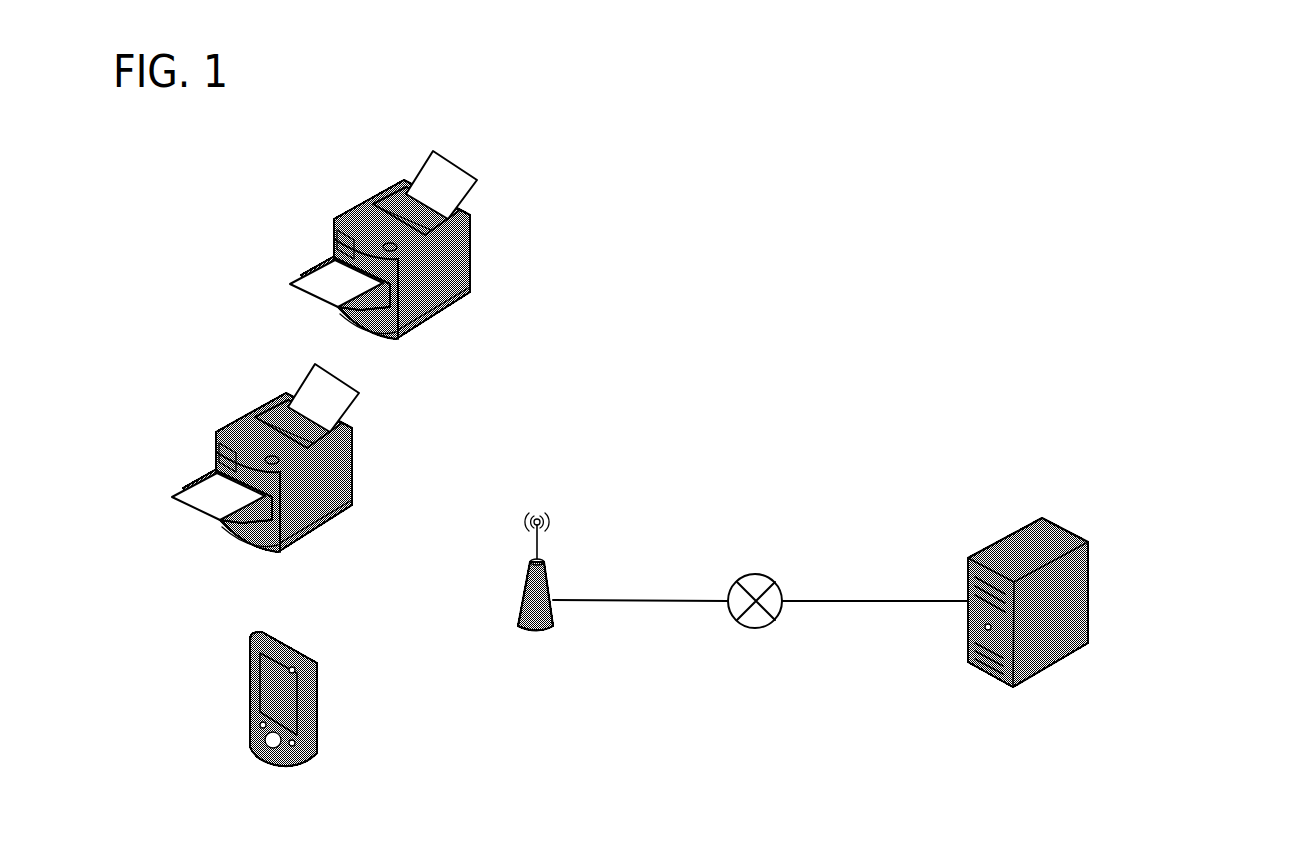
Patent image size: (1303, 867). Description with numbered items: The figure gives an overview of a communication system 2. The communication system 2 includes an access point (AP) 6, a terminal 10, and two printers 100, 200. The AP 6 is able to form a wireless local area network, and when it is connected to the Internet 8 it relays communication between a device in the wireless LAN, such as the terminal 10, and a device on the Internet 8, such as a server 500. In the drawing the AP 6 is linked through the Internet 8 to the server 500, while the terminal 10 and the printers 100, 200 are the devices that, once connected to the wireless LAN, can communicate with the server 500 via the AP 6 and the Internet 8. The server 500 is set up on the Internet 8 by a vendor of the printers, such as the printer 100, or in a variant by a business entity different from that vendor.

The communication system 2 is at (1037, 192).
The printer 100 is at (353, 460).
The printer 200 is at (472, 244).
The terminal 10 is at (320, 703).
The access point (AP) 6 is at (541, 549).
The Internet 8 is at (753, 575).
The server 500 is at (1065, 528).